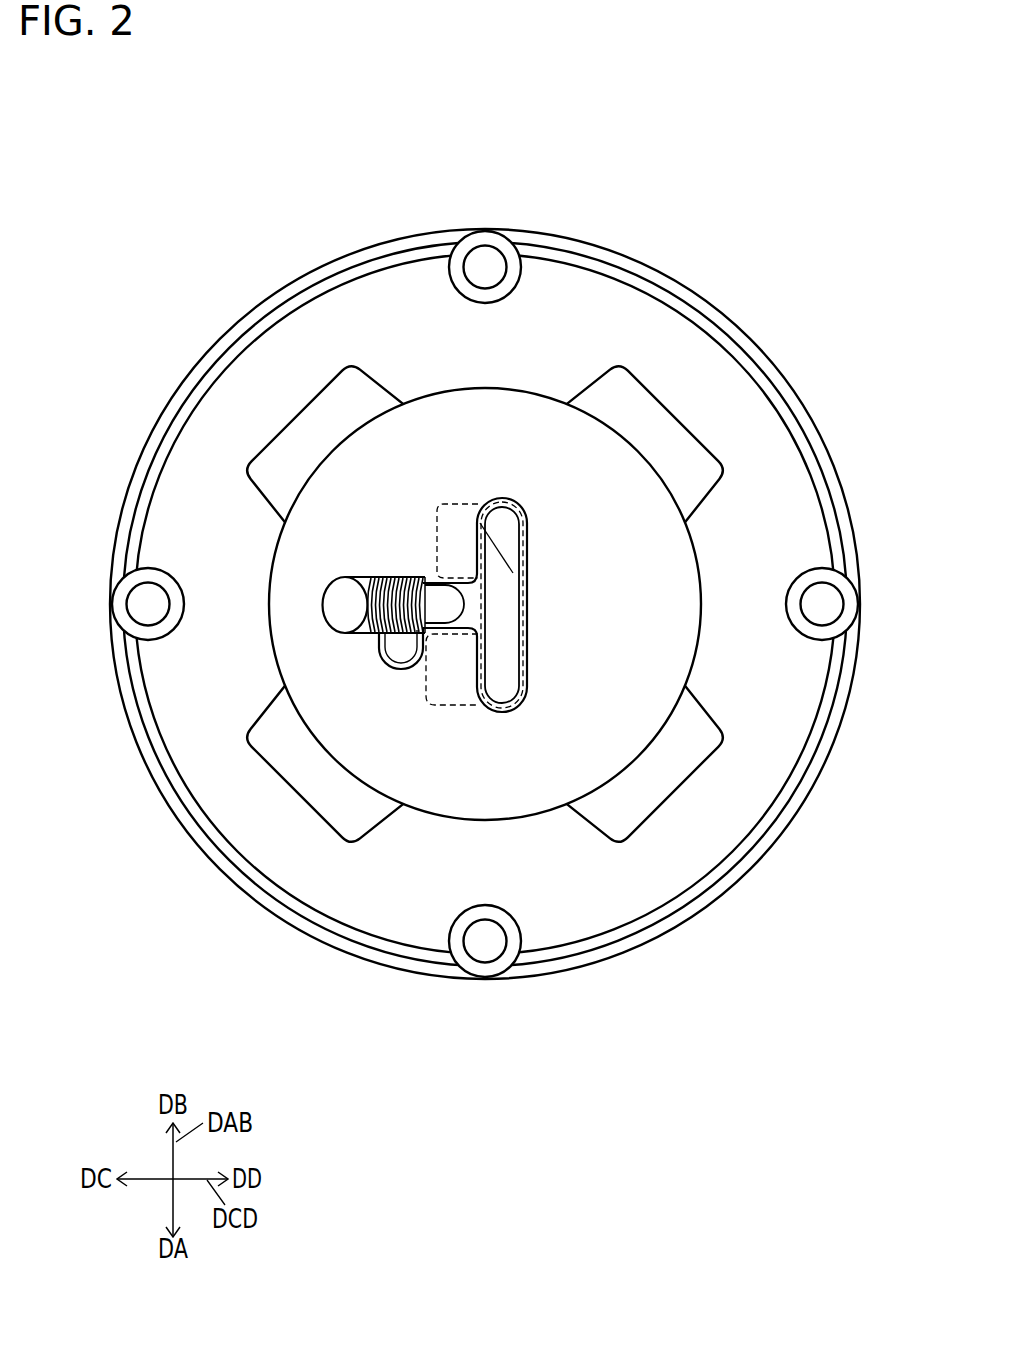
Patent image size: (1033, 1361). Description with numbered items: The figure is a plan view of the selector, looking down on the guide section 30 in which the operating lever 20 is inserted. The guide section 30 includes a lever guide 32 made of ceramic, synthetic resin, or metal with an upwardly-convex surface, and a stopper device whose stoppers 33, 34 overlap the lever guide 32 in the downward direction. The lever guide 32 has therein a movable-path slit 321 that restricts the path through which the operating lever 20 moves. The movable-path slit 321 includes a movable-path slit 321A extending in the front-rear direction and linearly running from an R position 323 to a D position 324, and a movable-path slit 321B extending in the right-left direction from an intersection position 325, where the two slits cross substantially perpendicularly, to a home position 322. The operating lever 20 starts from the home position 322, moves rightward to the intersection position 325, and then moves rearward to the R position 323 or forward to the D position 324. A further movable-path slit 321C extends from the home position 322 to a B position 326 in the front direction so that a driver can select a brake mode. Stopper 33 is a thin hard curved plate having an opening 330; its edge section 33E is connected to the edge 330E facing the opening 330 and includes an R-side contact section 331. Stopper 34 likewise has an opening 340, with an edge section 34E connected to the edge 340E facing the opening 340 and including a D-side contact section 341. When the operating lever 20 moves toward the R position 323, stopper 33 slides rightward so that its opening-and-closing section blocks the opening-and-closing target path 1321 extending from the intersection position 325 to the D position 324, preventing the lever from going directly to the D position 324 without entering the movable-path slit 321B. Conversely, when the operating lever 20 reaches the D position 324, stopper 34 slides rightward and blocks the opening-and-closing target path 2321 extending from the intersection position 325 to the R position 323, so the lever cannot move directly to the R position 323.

The operating lever 20 is at (341, 592).
The guide section 30 is at (578, 248).
The lever guide 32 is at (500, 394).
The stopper 33 is at (507, 518).
The stopper 34 is at (507, 690).
The movable-path slit 321 is at (527, 520).
The movable-path slit 321A is at (475, 525).
The movable-path slit 321B is at (462, 582).
The movable-path slit 321C is at (390, 640).
The home position 322 is at (400, 583).
The R position 323 is at (492, 510).
The D position 324 is at (527, 697).
The intersection position 325 is at (502, 605).
The B position 326 is at (385, 657).
The opening 330 is at (508, 597).
The R-side contact section 331 is at (512, 542).
The opening 340 is at (507, 617).
The D-side contact section 341 is at (512, 662).
The opening-and-closing target path 2321 is at (587, 502).
The opening-and-closing target path 1321 is at (587, 625).
The edge section 33E is at (513, 553).
The edge section 34E is at (500, 677).
The edge 330E is at (500, 548).
The edge 340E is at (520, 633).